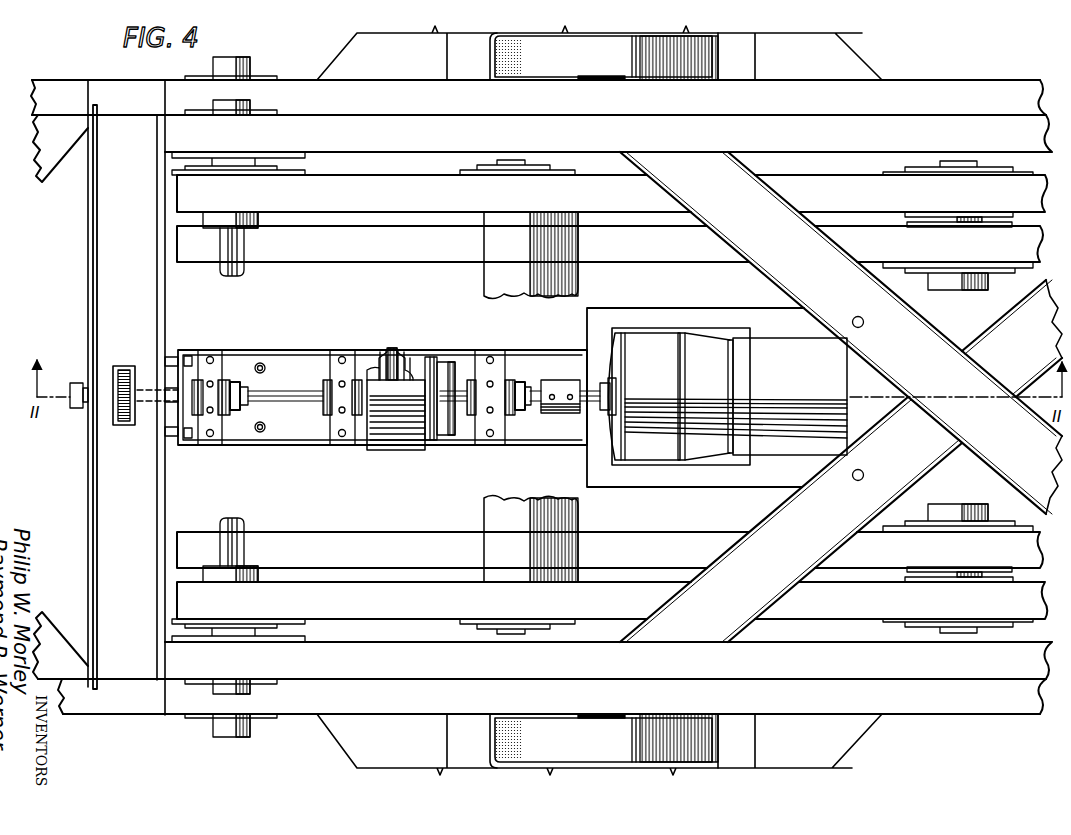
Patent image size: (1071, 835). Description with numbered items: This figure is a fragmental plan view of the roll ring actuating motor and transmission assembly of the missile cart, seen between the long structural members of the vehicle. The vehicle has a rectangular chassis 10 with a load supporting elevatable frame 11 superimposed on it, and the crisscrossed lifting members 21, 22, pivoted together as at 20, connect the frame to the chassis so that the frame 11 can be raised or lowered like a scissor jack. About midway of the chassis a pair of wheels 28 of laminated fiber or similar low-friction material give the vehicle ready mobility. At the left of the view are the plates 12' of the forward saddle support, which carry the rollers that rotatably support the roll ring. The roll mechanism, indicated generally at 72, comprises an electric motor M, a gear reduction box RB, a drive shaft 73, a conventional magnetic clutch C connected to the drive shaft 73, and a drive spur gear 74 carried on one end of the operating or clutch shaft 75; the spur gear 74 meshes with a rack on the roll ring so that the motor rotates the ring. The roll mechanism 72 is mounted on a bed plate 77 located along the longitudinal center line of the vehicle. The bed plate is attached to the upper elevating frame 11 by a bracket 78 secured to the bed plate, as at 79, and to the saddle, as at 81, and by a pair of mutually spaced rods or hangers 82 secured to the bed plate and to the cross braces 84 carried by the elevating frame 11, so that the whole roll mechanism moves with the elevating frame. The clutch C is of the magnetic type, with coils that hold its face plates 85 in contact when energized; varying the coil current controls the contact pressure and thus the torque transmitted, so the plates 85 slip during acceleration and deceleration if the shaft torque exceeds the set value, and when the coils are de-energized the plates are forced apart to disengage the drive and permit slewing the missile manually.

The chassis 10 is at (297, 78).
The elevatable frame 11 is at (359, 145).
The plates 12' is at (134, 397).
The pivot 20 is at (958, 163).
The lifting members 21 is at (356, 203).
The lifting members 22 is at (357, 251).
The wheels 28 is at (547, 50).
The roll mechanism 72 is at (460, 305).
The drive shaft 73 is at (513, 380).
The drive spur gear 74 is at (124, 365).
The clutch shaft 75 is at (288, 392).
The bed plate 77 is at (560, 358).
The bracket 78 is at (215, 350).
The bracket attachment to bed plate 79 is at (262, 362).
The bracket attachment to saddle 81 is at (200, 361).
The rods or hangers 82 is at (864, 322).
The cross braces 84 is at (771, 250).
The face plates 85 is at (400, 348).
The magnetic clutch C is at (412, 344).
The electric motor M is at (792, 382).
The gear reduction box RB is at (660, 372).